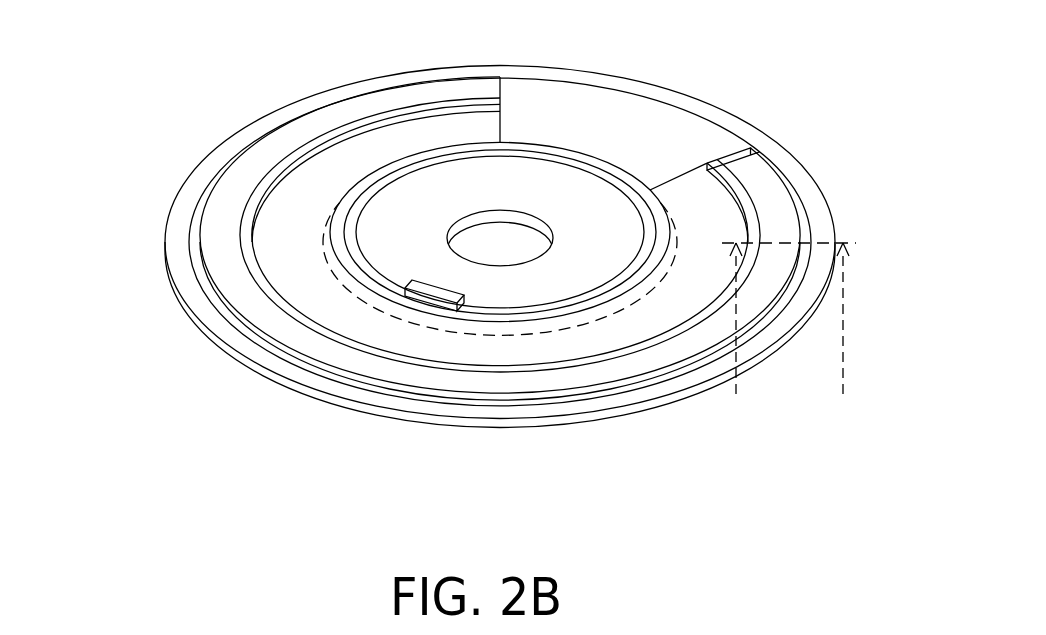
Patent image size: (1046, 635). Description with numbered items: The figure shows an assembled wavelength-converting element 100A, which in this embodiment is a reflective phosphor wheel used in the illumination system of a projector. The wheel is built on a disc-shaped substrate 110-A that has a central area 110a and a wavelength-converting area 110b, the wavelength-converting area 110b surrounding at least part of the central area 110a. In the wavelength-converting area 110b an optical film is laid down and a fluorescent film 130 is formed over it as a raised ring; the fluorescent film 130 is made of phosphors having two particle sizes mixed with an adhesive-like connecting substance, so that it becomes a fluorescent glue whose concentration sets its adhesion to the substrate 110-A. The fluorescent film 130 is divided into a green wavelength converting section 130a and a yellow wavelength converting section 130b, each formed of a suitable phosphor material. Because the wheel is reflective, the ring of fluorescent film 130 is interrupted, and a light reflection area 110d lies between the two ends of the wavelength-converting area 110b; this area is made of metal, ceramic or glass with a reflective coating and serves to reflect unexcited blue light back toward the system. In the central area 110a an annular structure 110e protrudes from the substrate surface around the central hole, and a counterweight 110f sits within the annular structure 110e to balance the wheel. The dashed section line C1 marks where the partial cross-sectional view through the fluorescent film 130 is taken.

The wavelength-converting element 100A is at (788, 62).
The substrate 110-A is at (648, 482).
The central area 110a is at (537, 335).
The wavelength-converting area 110b is at (612, 398).
The light reflection area 110d is at (610, 107).
The annular structure 110e is at (496, 292).
The counterweight 110f is at (427, 295).
The fluorescent film 130 is at (82, 133).
The green wavelength converting section 130a is at (238, 187).
The yellow wavelength converting section 130b is at (255, 213).
The section line C1 is at (788, 337).